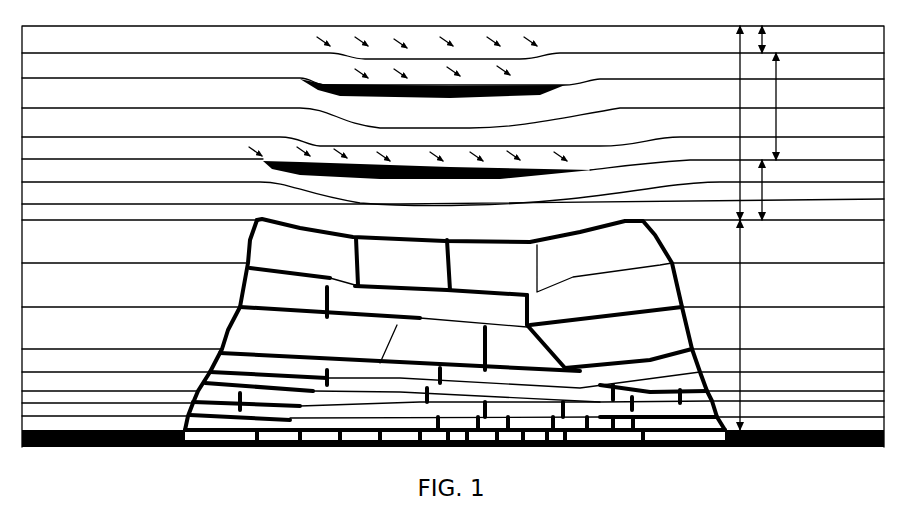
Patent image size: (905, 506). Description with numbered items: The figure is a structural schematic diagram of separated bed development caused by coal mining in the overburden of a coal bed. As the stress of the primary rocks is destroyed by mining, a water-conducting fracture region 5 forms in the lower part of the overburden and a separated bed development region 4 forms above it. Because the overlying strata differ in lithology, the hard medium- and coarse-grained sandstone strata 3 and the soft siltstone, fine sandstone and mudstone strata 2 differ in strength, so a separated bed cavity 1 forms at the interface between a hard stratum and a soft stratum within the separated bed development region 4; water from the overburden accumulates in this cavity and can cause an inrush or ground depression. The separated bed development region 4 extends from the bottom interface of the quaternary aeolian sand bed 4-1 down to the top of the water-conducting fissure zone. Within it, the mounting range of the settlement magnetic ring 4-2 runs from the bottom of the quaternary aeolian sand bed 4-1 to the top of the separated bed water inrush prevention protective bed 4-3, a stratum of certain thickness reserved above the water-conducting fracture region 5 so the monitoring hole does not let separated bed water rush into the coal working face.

The separated bed cavity 1 is at (430, 159).
The siltstone, fine sandstone and mudstone strata 2 is at (437, 135).
The medium- and coarse-grained sandstone strata 3 is at (453, 114).
The separated bed development region 4 is at (453, 123).
The quaternary aeolian sand bed 4-1 is at (778, 39).
The mounting range of settlement magnetic ring 4-2 is at (791, 106).
The separated bed water inrush prevention protective bed 4-3 is at (779, 190).
The water-conducting fracture region 5 is at (453, 329).